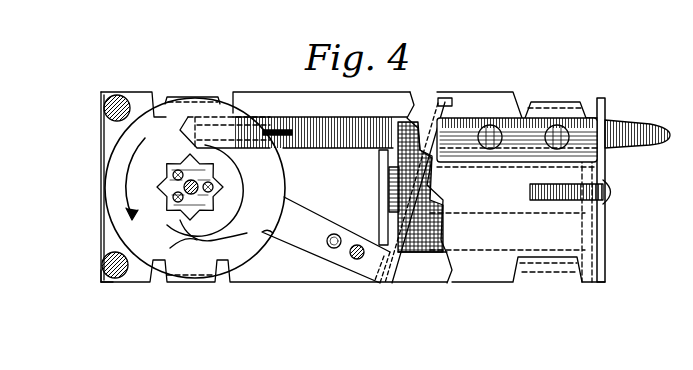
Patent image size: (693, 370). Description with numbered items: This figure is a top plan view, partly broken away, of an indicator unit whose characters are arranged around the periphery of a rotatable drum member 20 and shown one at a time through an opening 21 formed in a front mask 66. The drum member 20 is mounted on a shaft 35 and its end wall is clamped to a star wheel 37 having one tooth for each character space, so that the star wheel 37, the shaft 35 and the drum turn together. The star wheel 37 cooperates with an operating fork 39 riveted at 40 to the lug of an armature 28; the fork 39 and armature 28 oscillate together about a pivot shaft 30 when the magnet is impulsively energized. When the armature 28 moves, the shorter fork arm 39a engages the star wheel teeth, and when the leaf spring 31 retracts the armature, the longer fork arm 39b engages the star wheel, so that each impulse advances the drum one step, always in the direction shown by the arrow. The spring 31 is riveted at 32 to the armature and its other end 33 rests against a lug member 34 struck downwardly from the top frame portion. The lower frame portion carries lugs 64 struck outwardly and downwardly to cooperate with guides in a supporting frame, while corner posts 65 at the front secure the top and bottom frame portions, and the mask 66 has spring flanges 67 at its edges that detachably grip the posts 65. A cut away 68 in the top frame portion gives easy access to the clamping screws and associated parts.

The rotatable drum member 20 is at (278, 180).
The opening 21 is at (100, 170).
The armature 28 is at (380, 188).
The shaft 30 is at (354, 259).
The leaf spring 31 is at (425, 186).
The rivet 32 is at (390, 282).
The spring end 33 is at (448, 100).
The lug member 34 is at (455, 112).
The shaft 35 is at (191, 194).
The star wheel 37 is at (168, 177).
The operating fork 39 is at (240, 232).
The fork arm 39a is at (197, 238).
The fork arm 39b is at (202, 123).
The rivet 40 is at (330, 248).
The lugs 64 is at (172, 95).
The corner posts 65 is at (122, 276).
The mask 66 is at (97, 250).
The spring flanges 67 is at (105, 283).
The cut away 68 is at (567, 162).